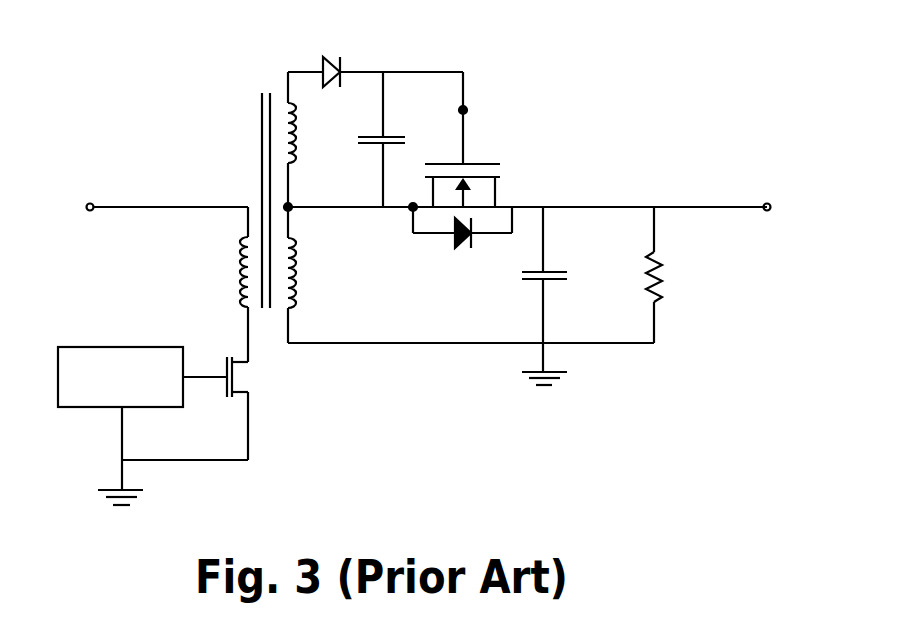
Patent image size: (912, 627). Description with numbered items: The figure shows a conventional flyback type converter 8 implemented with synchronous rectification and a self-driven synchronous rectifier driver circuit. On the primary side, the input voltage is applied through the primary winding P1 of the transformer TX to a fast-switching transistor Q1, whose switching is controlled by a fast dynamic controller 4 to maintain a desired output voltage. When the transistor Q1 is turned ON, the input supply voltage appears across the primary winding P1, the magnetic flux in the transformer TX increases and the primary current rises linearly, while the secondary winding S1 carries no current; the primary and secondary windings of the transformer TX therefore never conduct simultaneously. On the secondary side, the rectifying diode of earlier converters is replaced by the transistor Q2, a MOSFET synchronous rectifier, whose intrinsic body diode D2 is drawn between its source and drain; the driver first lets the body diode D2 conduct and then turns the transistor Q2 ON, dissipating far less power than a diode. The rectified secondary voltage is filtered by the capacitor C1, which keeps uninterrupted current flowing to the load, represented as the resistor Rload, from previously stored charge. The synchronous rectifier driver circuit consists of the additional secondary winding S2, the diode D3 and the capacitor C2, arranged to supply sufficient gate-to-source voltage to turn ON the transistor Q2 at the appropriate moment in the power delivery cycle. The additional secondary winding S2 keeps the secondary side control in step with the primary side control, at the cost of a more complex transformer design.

The flyback type converter 8 is at (614, 35).
The controller 4 is at (121, 347).
The transistor Q1 is at (251, 377).
The transistor Q2 is at (495, 138).
The diode D2 is at (454, 248).
The diode D3 is at (332, 57).
The capacitor C1 is at (525, 278).
The capacitor C2 is at (388, 123).
The secondary winding S1 is at (307, 273).
The additional secondary winding S2 is at (308, 133).
The primary winding P1 is at (225, 272).
The transformer TX is at (265, 216).
The resistor Rload is at (689, 277).